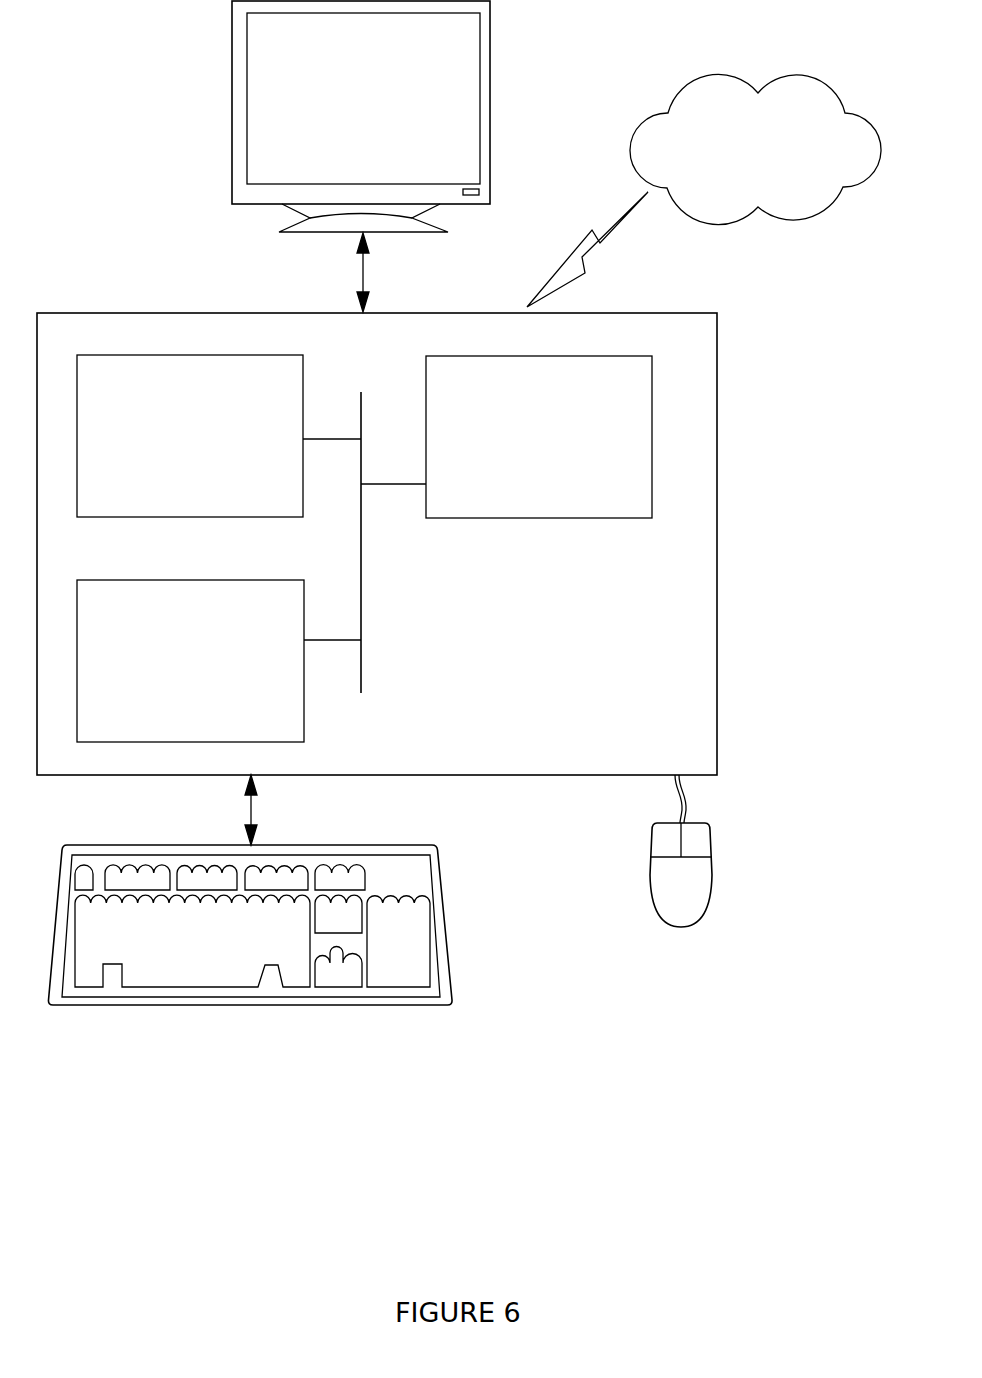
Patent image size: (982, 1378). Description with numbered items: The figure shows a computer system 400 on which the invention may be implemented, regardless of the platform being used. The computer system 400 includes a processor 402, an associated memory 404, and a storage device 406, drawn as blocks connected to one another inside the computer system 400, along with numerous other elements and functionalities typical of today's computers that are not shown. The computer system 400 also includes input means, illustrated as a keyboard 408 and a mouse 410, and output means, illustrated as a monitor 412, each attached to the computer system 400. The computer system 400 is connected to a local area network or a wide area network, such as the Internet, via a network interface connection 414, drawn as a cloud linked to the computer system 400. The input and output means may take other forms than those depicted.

The computer system 400 is at (771, 322).
The processor 402 is at (536, 450).
The memory 404 is at (169, 447).
The storage device 406 is at (166, 673).
The keyboard 408 is at (161, 965).
The mouse 410 is at (659, 898).
The monitor 412 is at (342, 125).
The network interface connection 414 is at (736, 168).